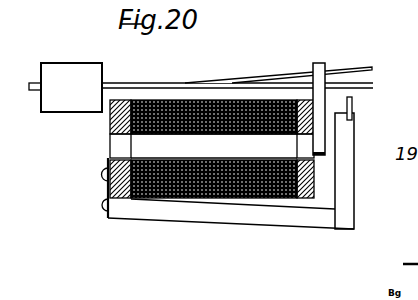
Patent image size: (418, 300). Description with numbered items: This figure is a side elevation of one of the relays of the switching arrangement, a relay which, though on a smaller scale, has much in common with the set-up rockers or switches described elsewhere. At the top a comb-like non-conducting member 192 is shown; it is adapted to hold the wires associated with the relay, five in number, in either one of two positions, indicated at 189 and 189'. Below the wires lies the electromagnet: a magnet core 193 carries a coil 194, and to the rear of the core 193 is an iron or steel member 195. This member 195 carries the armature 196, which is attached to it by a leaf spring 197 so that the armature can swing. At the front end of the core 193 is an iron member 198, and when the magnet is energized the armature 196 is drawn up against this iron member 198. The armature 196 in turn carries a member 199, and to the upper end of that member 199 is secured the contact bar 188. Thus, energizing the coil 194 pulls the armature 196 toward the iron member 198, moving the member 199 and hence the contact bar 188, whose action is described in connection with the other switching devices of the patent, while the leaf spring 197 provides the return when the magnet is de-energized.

The contact bar 188 is at (351, 108).
The first wire position 189 is at (278, 59).
The second wire position 189' is at (260, 77).
The comb-like non-conducting member 192 is at (318, 78).
The magnet core 193 is at (140, 143).
The coil 194 is at (108, 197).
The iron or steel member 195 is at (109, 124).
The armature 196 is at (220, 216).
The leaf spring 197 is at (107, 188).
The iron member 198 is at (311, 199).
The member carrying contact bar 199 is at (345, 187).